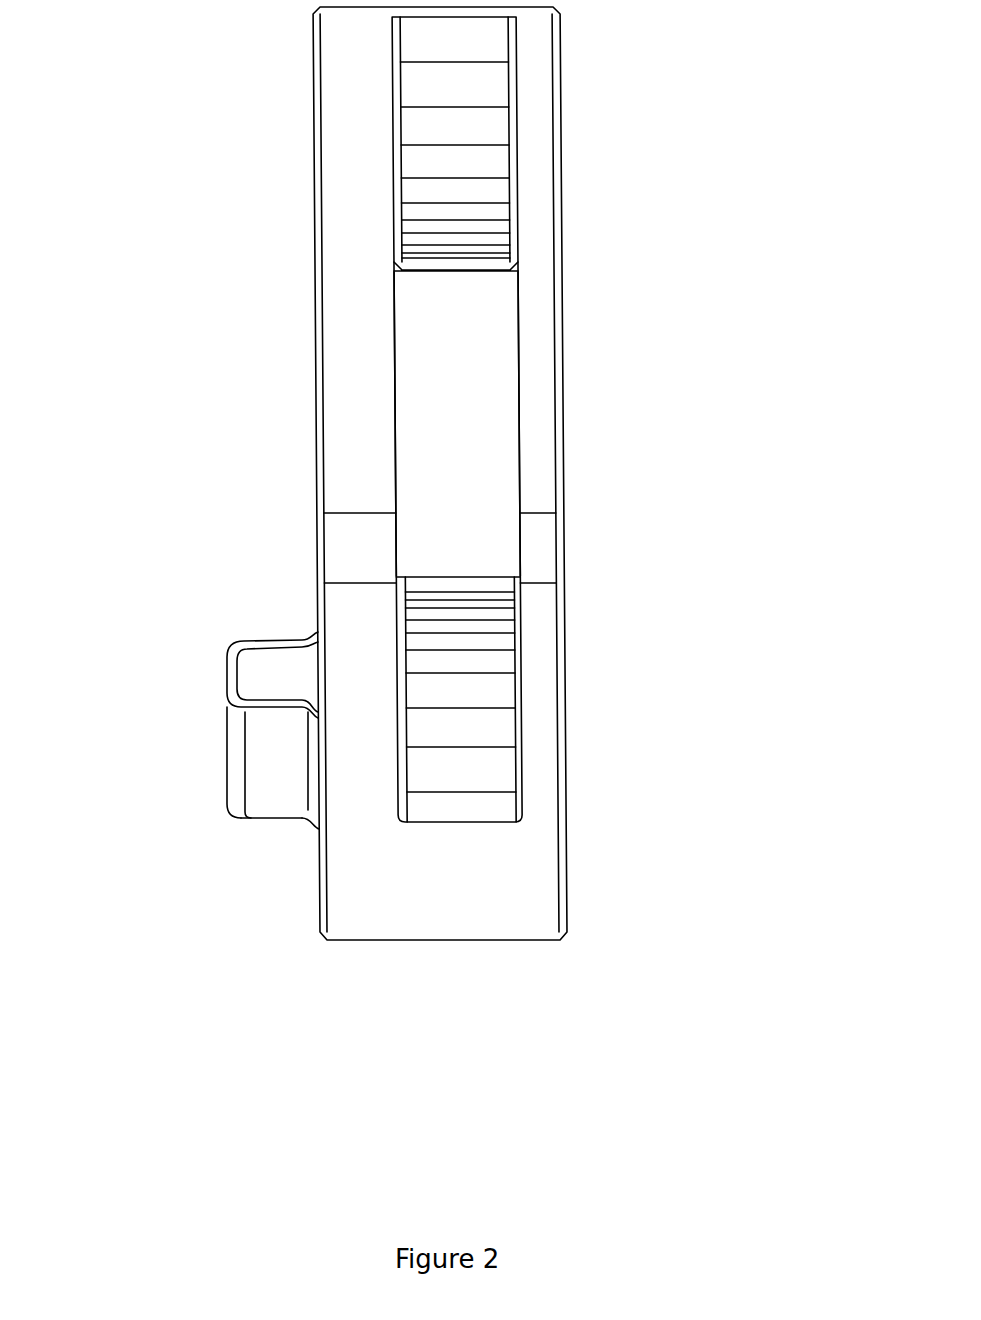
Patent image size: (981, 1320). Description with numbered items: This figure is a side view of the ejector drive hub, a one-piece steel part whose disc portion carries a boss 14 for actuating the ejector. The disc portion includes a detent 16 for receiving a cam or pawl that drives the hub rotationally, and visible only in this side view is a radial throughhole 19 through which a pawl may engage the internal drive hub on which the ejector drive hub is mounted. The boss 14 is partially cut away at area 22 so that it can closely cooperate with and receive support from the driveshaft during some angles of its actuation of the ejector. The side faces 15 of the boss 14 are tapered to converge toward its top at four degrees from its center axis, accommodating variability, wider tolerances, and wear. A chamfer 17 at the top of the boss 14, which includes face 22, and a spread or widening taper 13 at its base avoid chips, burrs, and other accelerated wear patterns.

The spread taper 13 is at (313, 800).
The boss 14 is at (164, 818).
The side faces 15 is at (267, 772).
The detent 16 is at (470, 80).
The chamfer 17 is at (237, 762).
The radial throughhole 19 is at (463, 441).
The cutaway area 22 is at (267, 665).